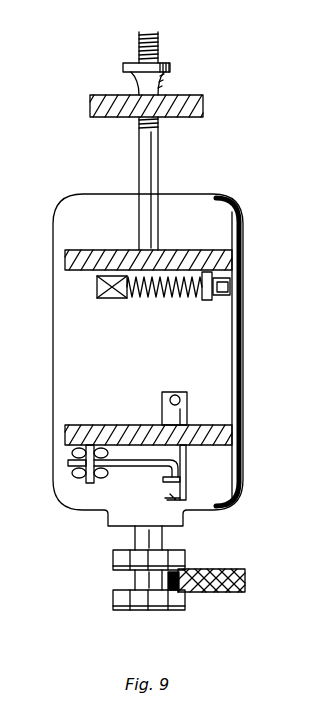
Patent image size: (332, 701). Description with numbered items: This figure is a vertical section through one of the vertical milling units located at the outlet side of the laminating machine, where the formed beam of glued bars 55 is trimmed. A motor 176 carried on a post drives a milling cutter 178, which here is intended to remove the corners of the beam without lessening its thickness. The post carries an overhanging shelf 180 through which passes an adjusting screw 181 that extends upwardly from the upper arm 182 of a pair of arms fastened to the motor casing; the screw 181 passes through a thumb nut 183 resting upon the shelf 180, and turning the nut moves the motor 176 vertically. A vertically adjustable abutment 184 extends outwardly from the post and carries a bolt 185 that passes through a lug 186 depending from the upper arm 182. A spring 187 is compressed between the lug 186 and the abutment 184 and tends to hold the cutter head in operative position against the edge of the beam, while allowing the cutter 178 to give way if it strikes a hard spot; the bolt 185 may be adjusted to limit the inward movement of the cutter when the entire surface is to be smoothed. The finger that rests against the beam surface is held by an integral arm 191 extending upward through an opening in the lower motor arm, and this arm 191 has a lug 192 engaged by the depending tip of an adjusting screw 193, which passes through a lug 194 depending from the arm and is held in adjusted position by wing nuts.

The motor 176 is at (223, 202).
The milling cutter 178 is at (119, 611).
The overhanging shelf 180 is at (203, 102).
The adjusting screw 181 is at (156, 170).
The upper arm 182 is at (112, 427).
The thumb nut 183 is at (170, 70).
The vertically adjustable abutment 184 is at (108, 298).
The bolt 185 is at (222, 296).
The lug 186 is at (206, 300).
The spring 187 is at (165, 297).
The integral arm 191 is at (186, 392).
The lug 192 is at (186, 476).
The adjusting screw 193 is at (131, 467).
The lug 194 is at (88, 478).
The bars 55 is at (236, 612).